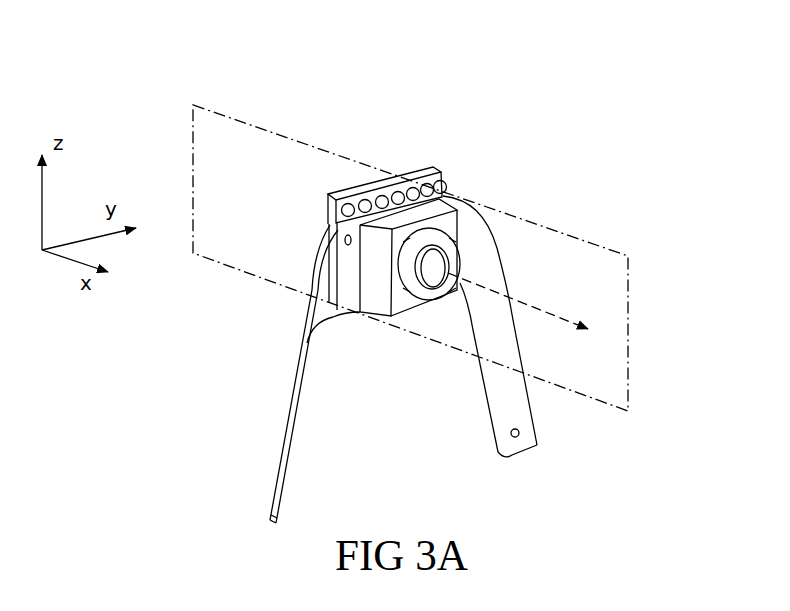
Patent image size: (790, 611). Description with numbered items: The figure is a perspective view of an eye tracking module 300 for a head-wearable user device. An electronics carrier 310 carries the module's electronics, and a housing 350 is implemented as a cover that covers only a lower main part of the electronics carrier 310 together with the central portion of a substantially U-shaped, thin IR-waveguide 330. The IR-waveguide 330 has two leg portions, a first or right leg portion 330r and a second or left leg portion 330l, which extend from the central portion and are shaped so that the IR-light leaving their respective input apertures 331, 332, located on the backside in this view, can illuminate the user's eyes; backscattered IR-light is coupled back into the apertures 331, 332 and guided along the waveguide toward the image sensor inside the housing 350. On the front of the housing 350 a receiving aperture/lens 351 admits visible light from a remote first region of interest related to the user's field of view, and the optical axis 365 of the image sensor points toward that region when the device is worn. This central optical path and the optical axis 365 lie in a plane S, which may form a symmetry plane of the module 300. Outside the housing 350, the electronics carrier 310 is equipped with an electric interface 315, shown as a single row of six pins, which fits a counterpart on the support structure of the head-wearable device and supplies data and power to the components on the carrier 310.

The eye tracking module 300 is at (420, 63).
The electronics carrier 310 is at (416, 166).
The electric interface 315 is at (450, 181).
The IR-waveguide 330 is at (303, 248).
The right leg portion 330r is at (261, 407).
The left leg portion 330l is at (485, 432).
The input aperture 331 is at (271, 490).
The input aperture 332 is at (525, 443).
The housing 350 is at (412, 322).
The receiving aperture/lens 351 is at (437, 300).
The optical axis 365 is at (563, 313).
The plane S is at (607, 248).